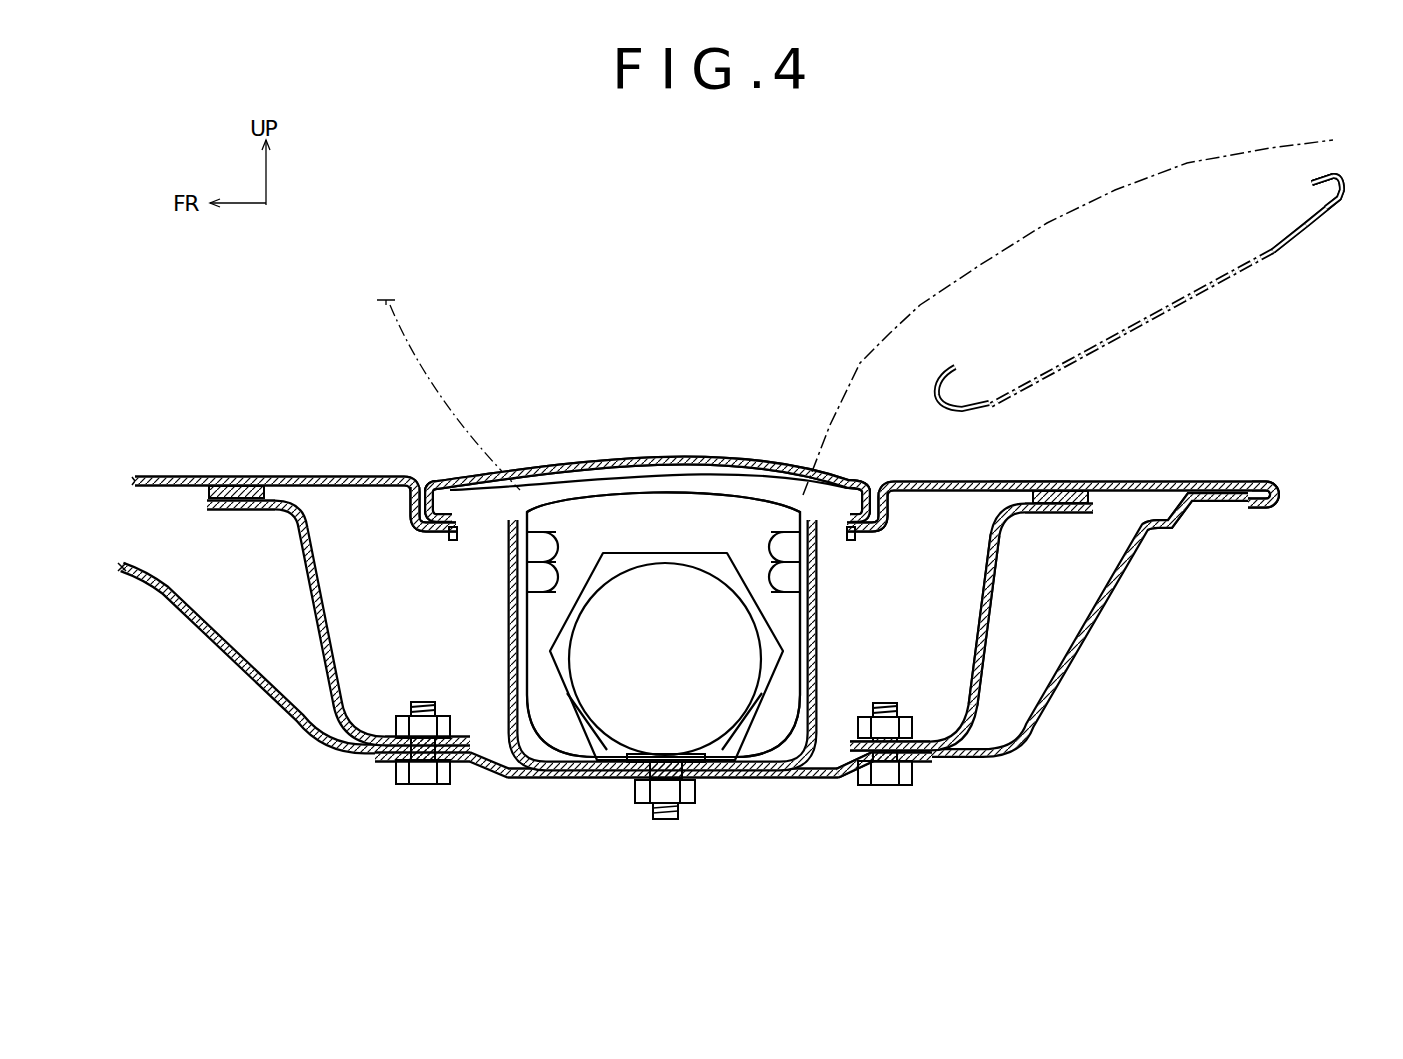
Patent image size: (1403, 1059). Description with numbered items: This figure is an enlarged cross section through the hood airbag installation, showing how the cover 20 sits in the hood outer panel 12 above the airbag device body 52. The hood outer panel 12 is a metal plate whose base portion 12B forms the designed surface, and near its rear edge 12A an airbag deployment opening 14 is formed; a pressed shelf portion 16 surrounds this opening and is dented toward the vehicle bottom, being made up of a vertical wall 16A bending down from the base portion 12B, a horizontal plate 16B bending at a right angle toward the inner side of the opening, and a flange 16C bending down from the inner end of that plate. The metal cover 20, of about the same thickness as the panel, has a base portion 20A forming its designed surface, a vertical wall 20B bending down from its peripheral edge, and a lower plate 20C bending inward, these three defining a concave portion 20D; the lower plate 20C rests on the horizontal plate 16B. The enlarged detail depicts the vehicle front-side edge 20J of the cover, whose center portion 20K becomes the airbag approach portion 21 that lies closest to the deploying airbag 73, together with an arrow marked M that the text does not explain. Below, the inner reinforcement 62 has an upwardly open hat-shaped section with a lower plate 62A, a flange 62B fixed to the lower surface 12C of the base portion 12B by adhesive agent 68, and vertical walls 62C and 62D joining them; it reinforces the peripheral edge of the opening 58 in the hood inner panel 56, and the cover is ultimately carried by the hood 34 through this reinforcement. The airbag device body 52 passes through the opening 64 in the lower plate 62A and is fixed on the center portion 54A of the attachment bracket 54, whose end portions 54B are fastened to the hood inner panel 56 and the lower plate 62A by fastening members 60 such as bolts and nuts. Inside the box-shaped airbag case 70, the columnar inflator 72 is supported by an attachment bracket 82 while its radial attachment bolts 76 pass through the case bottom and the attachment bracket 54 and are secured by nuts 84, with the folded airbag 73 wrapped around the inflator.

The hood outer panel 12 is at (1134, 472).
The rear edge 12A is at (1283, 488).
The base portion 12B is at (1030, 480).
The lower surface 12C is at (1170, 522).
The airbag deployment opening 14 is at (520, 505).
The shelf portion 16 is at (410, 533).
The vertical wall 16A is at (412, 522).
The horizontal plate 16B is at (438, 532).
The flange 16C is at (453, 541).
The cover 20 is at (712, 458).
The base portion 20A is at (625, 462).
The vertical wall 20B is at (425, 496).
The lower plate 20C is at (448, 502).
The concave portion 20D is at (440, 488).
The vehicle front-side edge 20J is at (1343, 194).
The center portion 20K is at (428, 478).
The airbag approach portion 21 is at (1318, 176).
The mounting direction M is at (1330, 166).
The hood 34 is at (203, 452).
The airbag device body 52 is at (508, 665).
The attachment bracket 54 is at (745, 780).
The center portion 54A is at (590, 780).
The end portions 54B is at (383, 763).
The hood inner panel 56 is at (1097, 635).
The opening 58 is at (817, 772).
The fastening members 60 is at (425, 778).
The inner reinforcement 62 is at (995, 630).
The lower plate 62A is at (388, 736).
The flange 62B is at (240, 510).
The vertical wall 62C is at (1003, 596).
The vertical wall 62D is at (300, 582).
The opening 64 is at (850, 722).
The adhesive agent 68 is at (215, 491).
The airbag case 70 is at (510, 618).
The inflator 72 is at (640, 556).
The airbag 73 is at (672, 506).
The attachment bolts 76 is at (668, 822).
The attachment bracket 82 is at (680, 554).
The nuts 84 is at (690, 800).